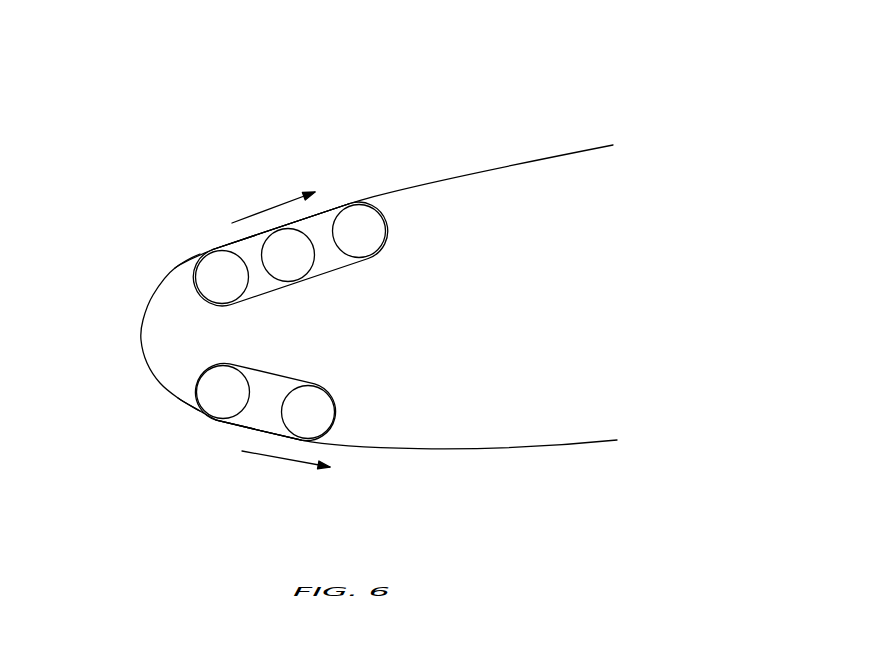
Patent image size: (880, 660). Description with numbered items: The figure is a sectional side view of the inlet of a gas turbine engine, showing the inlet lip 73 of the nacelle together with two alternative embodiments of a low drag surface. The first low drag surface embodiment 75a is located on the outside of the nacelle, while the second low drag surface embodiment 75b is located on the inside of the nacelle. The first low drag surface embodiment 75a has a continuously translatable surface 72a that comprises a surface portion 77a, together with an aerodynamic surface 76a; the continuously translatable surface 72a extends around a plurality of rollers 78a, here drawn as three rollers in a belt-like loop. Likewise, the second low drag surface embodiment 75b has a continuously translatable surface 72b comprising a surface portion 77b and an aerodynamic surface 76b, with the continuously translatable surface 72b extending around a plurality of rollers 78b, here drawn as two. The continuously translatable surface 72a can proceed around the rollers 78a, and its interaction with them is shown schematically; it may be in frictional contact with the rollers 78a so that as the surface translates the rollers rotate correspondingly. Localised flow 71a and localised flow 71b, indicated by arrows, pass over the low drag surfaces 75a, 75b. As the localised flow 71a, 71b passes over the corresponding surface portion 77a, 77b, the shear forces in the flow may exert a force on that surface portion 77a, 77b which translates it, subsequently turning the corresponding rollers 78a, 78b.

The localised flow 71a is at (273, 207).
The localised flow 71b is at (286, 466).
The continuously translatable surface 72a is at (322, 277).
The continuously translatable surface 72b is at (287, 380).
The inlet lip 73 is at (172, 280).
The first low drag surface embodiment 75a is at (220, 232).
The second low drag surface embodiment 75b is at (197, 414).
The aerodynamic surface 76a is at (447, 177).
The aerodynamic surface 76b is at (162, 385).
The surface portion 77a is at (332, 207).
The surface portion 77b is at (242, 425).
The rollers 78a is at (372, 242).
The rollers 78b is at (323, 410).